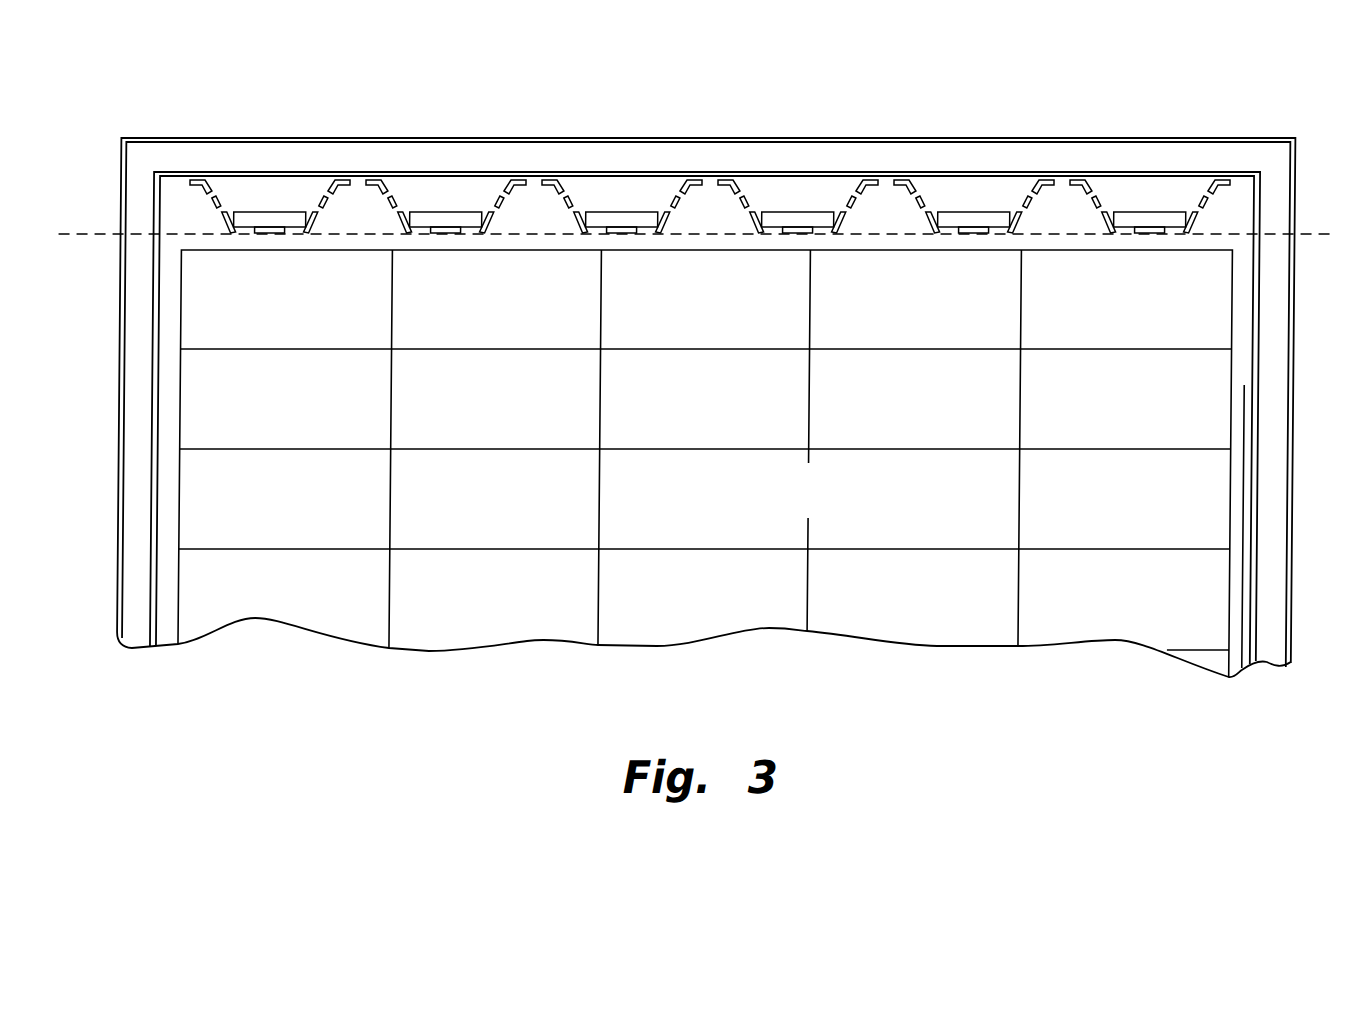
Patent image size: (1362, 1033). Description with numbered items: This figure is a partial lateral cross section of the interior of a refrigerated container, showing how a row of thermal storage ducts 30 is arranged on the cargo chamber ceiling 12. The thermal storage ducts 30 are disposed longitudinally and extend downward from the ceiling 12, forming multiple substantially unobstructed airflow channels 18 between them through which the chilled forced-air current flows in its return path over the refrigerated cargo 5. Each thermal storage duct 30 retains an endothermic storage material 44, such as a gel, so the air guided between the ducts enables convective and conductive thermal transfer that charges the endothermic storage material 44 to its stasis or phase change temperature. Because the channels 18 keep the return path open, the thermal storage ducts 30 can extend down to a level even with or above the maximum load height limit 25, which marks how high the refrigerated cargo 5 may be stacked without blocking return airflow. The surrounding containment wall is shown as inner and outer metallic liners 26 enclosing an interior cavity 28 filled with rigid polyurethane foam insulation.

The refrigerated cargo 5 is at (728, 424).
The cargo chamber ceiling 12 is at (529, 196).
The airflow channels 18 is at (712, 219).
The maximum load height limit 25 is at (1314, 232).
The inner and outer metallic liners 26 is at (347, 174).
The interior cavity 28 is at (251, 154).
The thermal storage ducts 30 is at (850, 220).
The endothermic storage material 44 is at (804, 217).